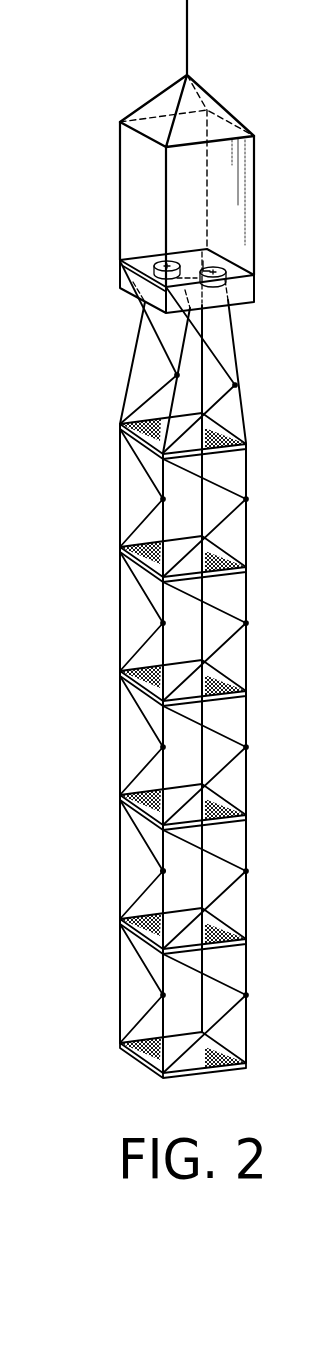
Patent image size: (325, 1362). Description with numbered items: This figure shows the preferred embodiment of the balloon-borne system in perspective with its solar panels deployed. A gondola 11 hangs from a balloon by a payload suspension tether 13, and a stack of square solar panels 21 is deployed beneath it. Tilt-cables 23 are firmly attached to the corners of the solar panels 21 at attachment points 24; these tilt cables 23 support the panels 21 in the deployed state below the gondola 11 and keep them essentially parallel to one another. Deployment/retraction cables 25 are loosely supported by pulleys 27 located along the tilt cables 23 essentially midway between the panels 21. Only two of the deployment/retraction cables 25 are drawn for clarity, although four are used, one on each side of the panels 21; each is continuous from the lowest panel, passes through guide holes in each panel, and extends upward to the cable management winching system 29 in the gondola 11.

The gondola 11 is at (120, 202).
The payload suspension tether 13 is at (187, 22).
The cable management winching system 29 is at (120, 280).
The solar panels 21 is at (120, 433).
The tilt-cables 23 is at (120, 612).
The attachment points 24 is at (120, 676).
The deployment/retraction cables 25 is at (132, 820).
The pulleys 27 is at (163, 875).